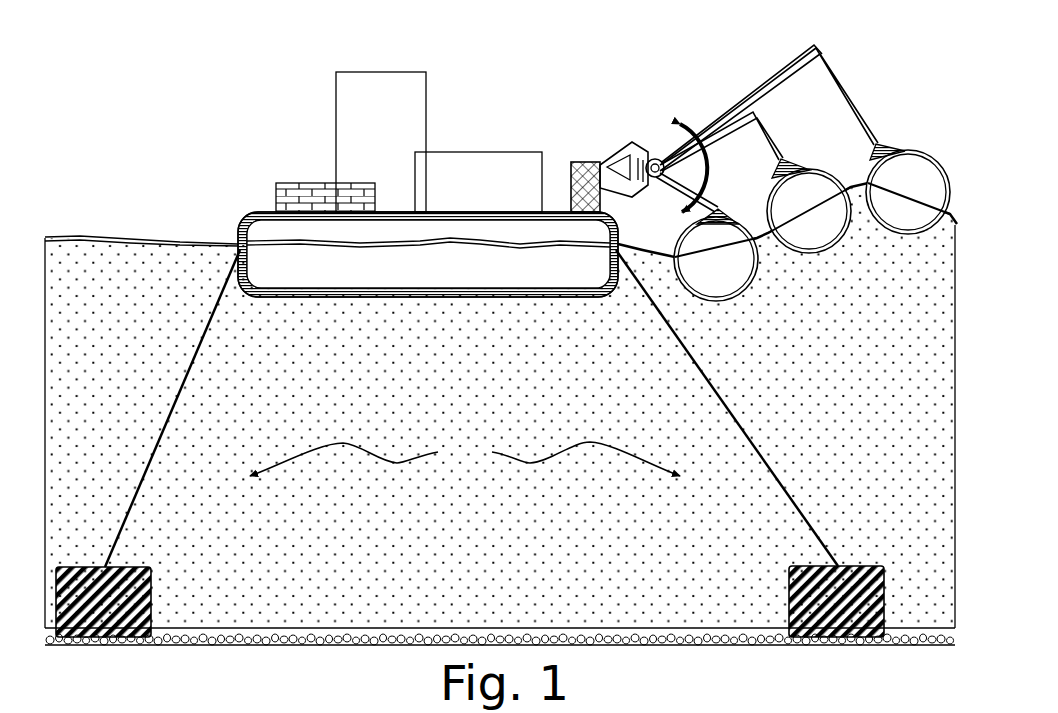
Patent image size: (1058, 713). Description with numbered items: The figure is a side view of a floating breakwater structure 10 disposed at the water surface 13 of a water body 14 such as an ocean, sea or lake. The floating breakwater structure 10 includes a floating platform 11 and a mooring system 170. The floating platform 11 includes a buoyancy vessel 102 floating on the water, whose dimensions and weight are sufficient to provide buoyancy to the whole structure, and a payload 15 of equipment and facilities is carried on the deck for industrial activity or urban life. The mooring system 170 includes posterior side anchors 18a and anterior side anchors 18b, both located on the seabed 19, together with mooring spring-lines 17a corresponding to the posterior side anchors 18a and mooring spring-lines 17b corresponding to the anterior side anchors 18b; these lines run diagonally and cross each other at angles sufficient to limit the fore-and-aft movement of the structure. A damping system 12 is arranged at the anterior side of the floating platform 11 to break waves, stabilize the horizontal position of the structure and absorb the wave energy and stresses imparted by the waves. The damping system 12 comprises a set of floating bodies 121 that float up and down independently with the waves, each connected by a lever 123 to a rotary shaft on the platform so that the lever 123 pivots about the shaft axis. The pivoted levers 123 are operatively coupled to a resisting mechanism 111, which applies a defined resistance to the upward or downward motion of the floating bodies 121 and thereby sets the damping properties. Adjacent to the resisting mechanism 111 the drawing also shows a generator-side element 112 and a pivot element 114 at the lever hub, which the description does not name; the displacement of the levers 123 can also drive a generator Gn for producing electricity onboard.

The floating breakwater structure 10 is at (212, 58).
The floating platform 11 is at (404, 178).
The damping system 12 is at (803, 170).
The water surface 13 is at (80, 237).
The water body 14 is at (584, 528).
The payload 15 is at (415, 170).
The mooring spring-lines 17a is at (163, 430).
The mooring spring-lines 17b is at (705, 378).
The posterior side anchors 18a is at (152, 578).
The anterior side anchors 18b is at (789, 596).
The seabed 19 is at (478, 628).
The buoyancy vessel 102 is at (245, 212).
The resisting mechanism 111 is at (602, 163).
The generator 112 is at (578, 162).
The pivot shaft 114 is at (650, 160).
The floating bodies 121 is at (757, 272).
The levers 123 is at (773, 72).
The mooring system 170 is at (465, 457).